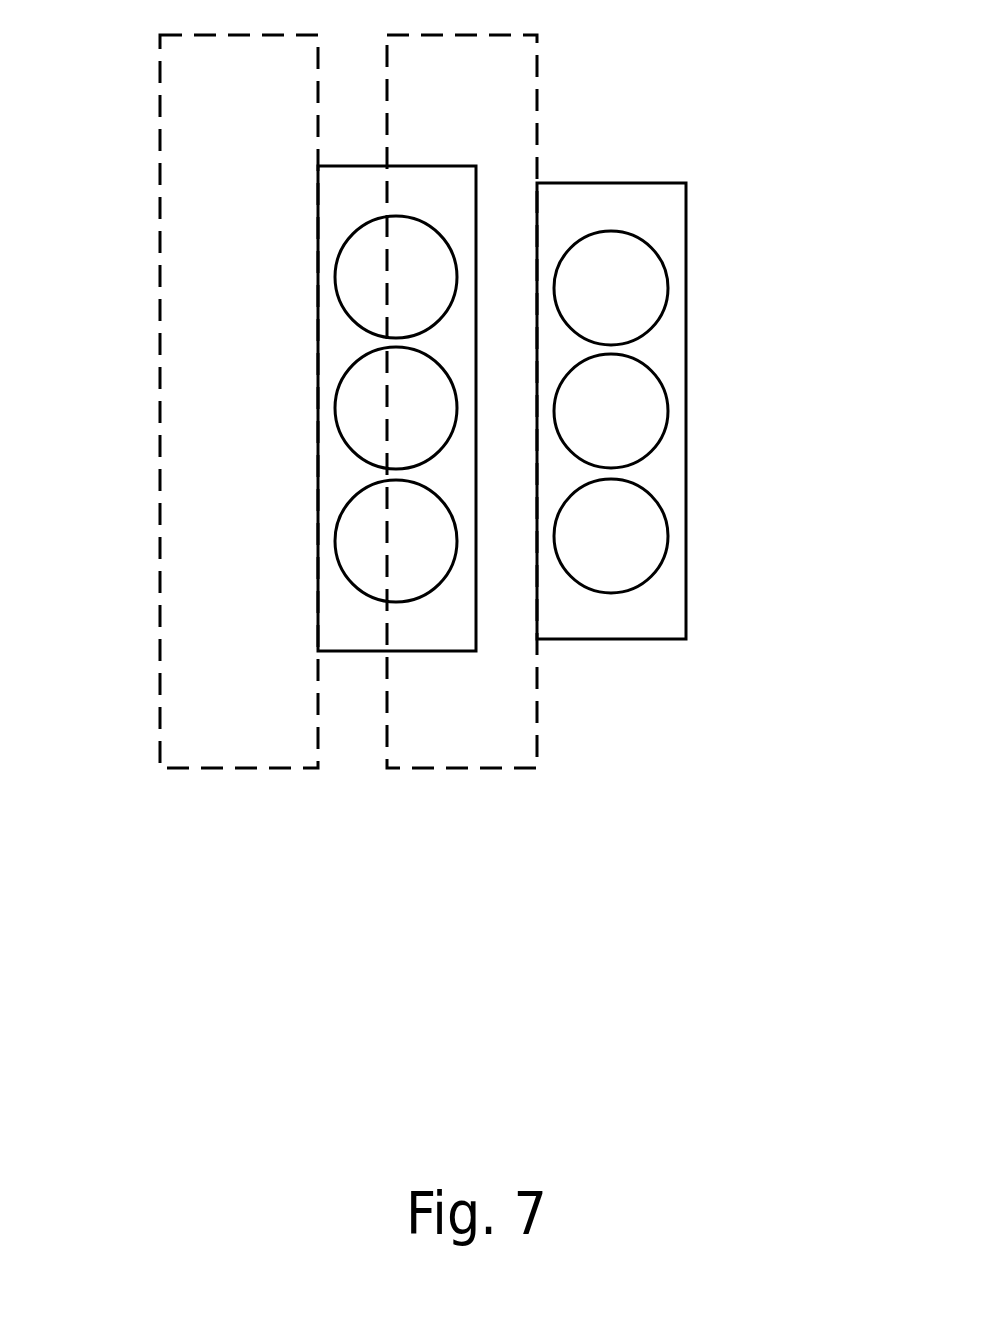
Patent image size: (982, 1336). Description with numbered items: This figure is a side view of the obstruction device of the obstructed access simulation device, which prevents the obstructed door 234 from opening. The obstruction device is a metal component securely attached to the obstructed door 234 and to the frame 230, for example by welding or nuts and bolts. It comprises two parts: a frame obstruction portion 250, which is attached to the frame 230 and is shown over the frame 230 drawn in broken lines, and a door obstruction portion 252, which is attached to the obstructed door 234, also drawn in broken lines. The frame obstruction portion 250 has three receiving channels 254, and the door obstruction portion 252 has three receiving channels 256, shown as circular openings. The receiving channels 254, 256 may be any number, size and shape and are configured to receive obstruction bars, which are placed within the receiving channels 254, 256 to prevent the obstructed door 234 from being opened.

The frame 230 is at (231, 768).
The obstructed door 234 is at (466, 768).
The frame obstruction portion 250 is at (367, 651).
The door obstruction portion 252 is at (686, 411).
The receiving channels 254 is at (388, 276).
The receiving channels 256 is at (615, 286).